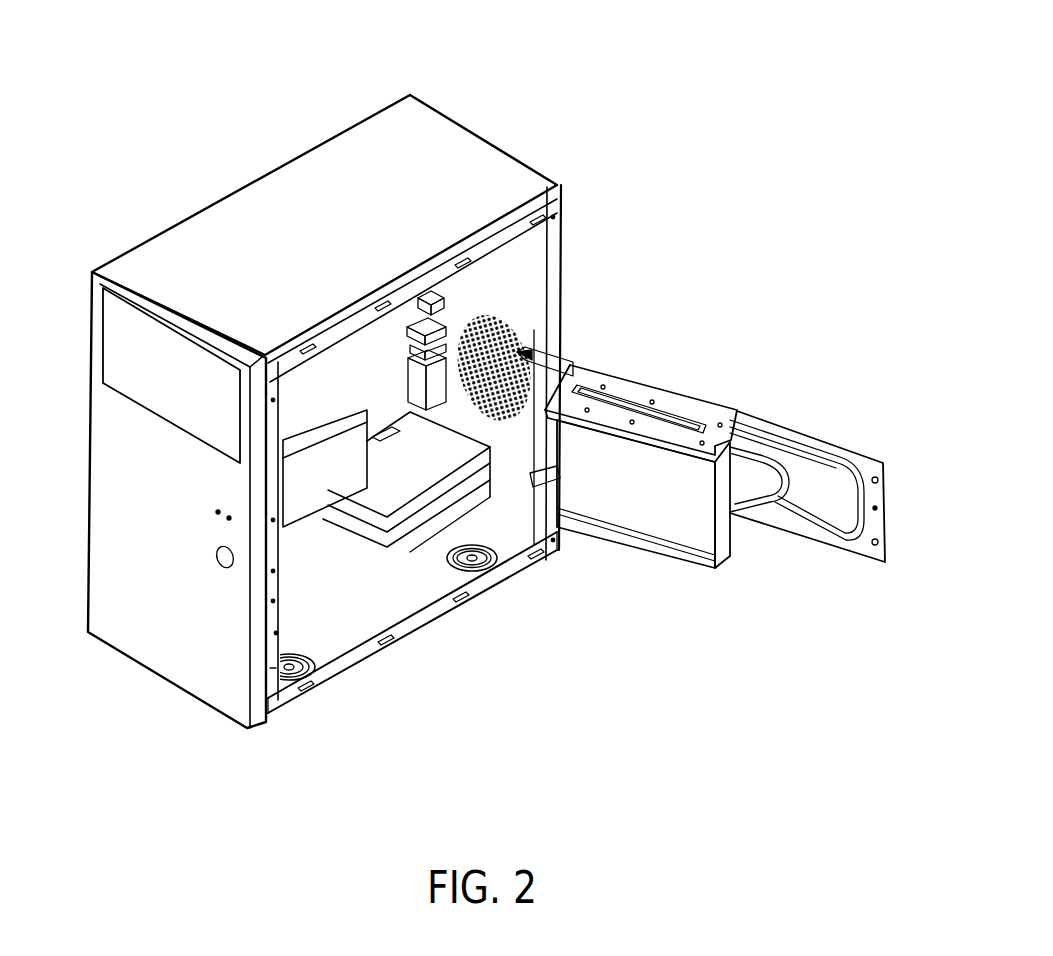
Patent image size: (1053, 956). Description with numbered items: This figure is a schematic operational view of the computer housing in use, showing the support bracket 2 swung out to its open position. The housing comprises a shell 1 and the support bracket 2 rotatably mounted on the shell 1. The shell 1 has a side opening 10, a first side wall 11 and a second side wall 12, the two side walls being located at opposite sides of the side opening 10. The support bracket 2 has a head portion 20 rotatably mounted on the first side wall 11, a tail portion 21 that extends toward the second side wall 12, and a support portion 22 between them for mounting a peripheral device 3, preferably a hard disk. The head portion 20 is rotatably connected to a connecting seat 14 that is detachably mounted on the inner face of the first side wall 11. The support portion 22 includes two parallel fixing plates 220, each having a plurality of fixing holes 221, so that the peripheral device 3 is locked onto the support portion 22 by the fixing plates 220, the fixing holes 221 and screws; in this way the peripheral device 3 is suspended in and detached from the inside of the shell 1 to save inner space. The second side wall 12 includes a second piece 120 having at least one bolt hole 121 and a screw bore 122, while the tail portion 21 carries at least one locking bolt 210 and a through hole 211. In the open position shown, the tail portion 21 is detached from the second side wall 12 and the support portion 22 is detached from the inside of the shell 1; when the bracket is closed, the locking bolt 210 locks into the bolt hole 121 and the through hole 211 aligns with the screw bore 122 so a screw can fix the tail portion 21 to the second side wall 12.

The shell 1 is at (380, 454).
The side opening 10 is at (415, 590).
The first side wall 11 is at (572, 237).
The second side wall 12 is at (262, 744).
The second piece 120 is at (279, 633).
The bolt hole 121 is at (273, 601).
The screw bore 122 is at (273, 571).
The connecting seat 14 is at (527, 472).
The support bracket 2 is at (770, 470).
The head portion 20 is at (575, 352).
The tail portion 21 is at (876, 506).
The locking bolt 210 is at (877, 545).
The through hole 211 is at (877, 508).
The support portion 22 is at (681, 494).
The fixing plates 220 is at (685, 453).
The fixing holes 221 is at (632, 424).
The peripheral device 3 is at (722, 560).